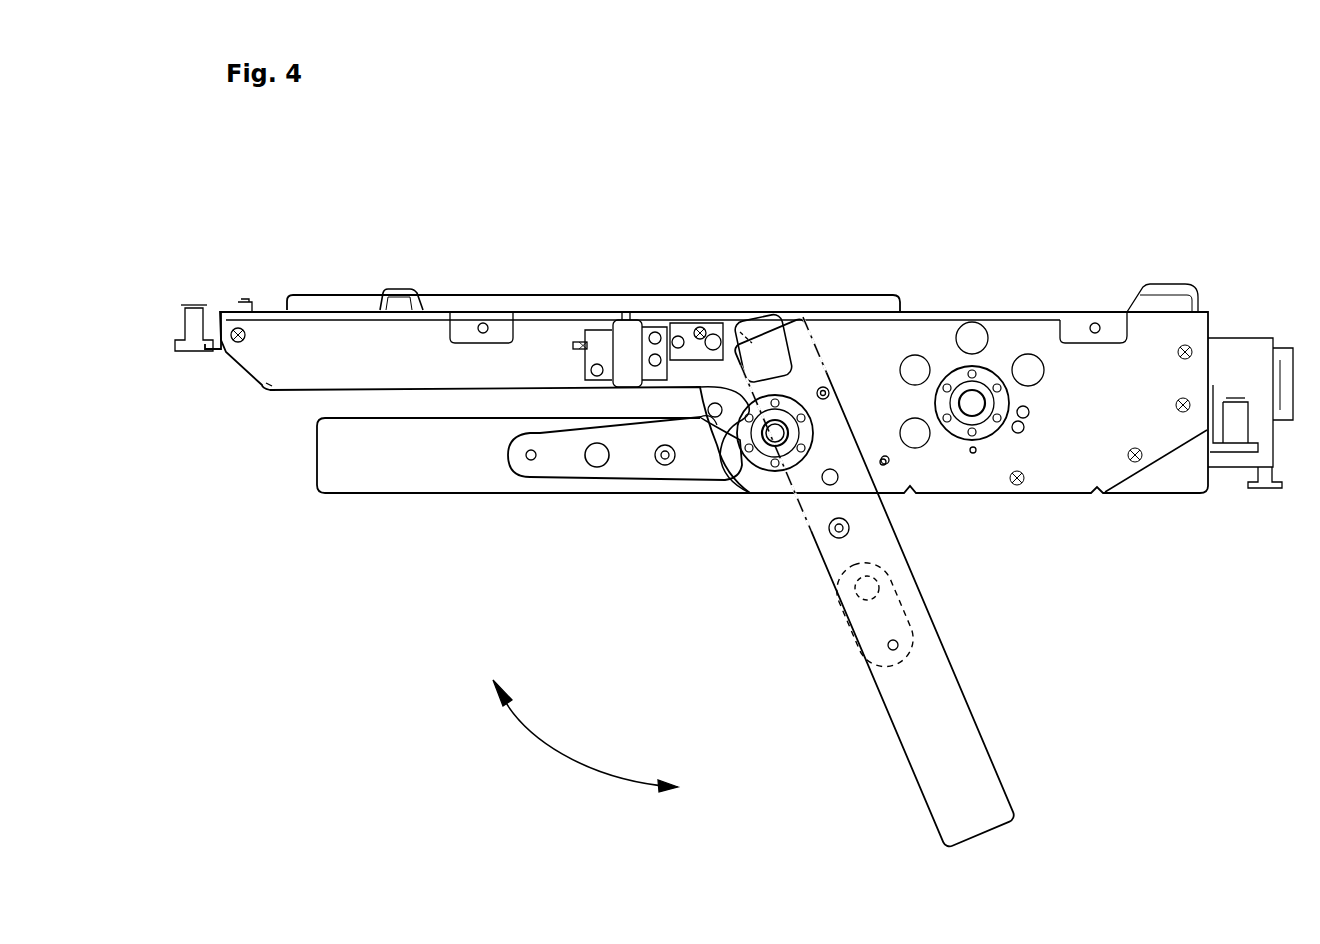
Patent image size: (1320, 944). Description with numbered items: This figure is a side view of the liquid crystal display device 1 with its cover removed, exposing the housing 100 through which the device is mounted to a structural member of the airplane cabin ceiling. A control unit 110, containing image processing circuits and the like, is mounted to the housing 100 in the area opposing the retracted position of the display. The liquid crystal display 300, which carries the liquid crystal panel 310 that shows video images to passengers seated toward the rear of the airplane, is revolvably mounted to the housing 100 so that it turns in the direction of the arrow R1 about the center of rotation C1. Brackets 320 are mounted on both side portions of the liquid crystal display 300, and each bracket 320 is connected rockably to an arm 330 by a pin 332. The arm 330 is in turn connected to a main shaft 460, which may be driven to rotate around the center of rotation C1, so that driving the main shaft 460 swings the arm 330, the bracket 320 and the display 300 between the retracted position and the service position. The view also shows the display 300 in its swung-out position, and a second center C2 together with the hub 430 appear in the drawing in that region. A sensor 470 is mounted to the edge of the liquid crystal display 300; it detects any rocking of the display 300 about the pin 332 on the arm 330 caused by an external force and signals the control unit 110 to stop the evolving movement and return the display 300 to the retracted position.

The liquid crystal display device 1 is at (1100, 236).
The housing 100 is at (912, 340).
The control unit 110 is at (318, 340).
The liquid crystal display 300 is at (362, 487).
The liquid crystal panel 310 is at (900, 750).
The bracket 320 is at (545, 470).
The arm 330 is at (688, 470).
The pin 332 is at (625, 480).
The drive hub 430 is at (973, 402).
The main shaft 460 is at (778, 420).
The sensor 470 is at (757, 350).
The center of rotation C1 is at (773, 470).
The second rotation axis C2 is at (875, 580).
The rotation direction R1 is at (585, 736).